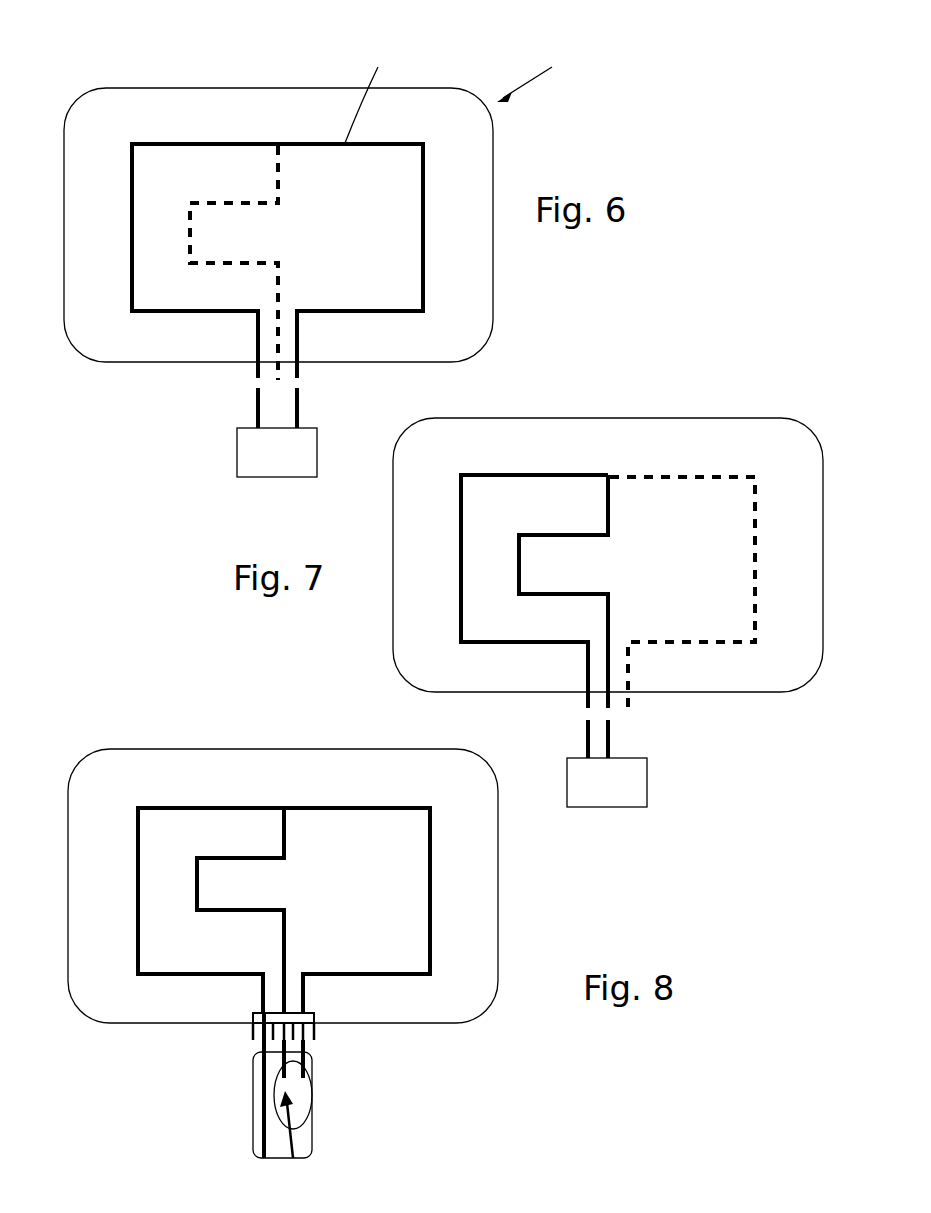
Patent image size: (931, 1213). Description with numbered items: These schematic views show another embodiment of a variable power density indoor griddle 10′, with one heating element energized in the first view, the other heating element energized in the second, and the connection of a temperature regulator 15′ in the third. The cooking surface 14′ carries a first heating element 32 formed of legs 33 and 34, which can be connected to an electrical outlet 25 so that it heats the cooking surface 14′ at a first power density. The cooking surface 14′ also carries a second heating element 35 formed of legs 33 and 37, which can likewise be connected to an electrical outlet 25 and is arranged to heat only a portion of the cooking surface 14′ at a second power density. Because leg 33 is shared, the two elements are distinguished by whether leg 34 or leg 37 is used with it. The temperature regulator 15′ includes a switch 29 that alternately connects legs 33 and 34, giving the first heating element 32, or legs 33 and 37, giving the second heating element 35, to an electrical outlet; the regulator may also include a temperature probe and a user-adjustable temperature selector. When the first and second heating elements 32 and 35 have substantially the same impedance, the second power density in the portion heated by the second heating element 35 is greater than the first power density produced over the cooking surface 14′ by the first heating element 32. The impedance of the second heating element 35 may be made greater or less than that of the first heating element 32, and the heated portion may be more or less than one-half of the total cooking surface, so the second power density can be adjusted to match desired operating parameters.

In FIG. 7, the variable power density indoor griddle 10′ is at (753, 402).
In FIG. 8, the variable power density indoor griddle 10′ is at (105, 729).
In FIG. 6, the cooking surface 14′ is at (92, 330).
In FIG. 7, the cooking surface 14′ is at (425, 652).
In FIG. 8, the cooking surface 14′ is at (100, 1002).
In FIG. 8, the temperature regulator 15′ is at (253, 1122).
In FIG. 6, the electrical outlet 25 is at (300, 453).
In FIG. 7, the electrical outlet 25 is at (628, 784).
In FIG. 8, the switch 29 is at (310, 1122).
In FIG. 6, the first heating element 32 is at (273, 122).
In FIG. 6, the leg 33 is at (175, 313).
In FIG. 7, the leg 33 is at (528, 476).
In FIG. 8, the leg 33 is at (167, 975).
In FIG. 8, the leg 34 is at (345, 807).
In FIG. 7, the second heating element 35 is at (518, 660).
In FIG. 7, the leg 37 is at (610, 516).
In FIG. 8, the leg 37 is at (230, 857).